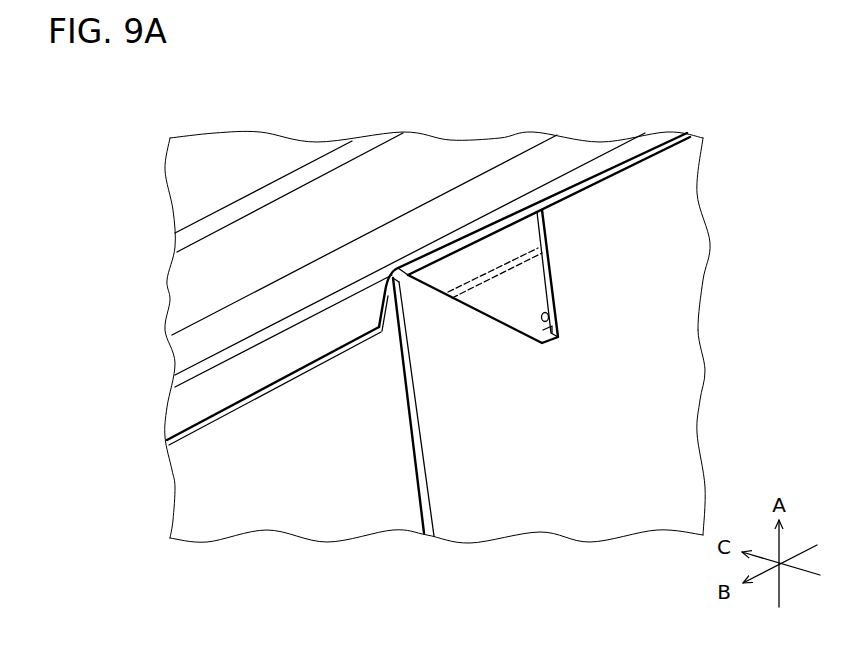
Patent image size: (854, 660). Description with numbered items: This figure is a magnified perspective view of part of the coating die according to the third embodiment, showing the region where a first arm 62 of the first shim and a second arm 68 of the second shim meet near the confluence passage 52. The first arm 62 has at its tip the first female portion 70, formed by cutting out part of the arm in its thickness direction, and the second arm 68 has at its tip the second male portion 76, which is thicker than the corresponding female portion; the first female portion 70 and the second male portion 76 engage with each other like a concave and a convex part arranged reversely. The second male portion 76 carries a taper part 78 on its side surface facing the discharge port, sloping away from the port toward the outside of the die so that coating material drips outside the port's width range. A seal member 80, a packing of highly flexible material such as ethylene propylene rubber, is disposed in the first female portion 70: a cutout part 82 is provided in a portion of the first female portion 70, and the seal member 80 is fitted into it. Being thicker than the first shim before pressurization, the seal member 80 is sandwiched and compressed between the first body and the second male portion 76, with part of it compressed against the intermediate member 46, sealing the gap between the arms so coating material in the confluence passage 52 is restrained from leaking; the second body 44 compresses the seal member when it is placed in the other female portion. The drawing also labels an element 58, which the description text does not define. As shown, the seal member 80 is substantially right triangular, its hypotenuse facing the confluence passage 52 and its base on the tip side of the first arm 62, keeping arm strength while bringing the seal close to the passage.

The second body 44 is at (172, 357).
The intermediate member 46 is at (207, 527).
The confluence passage 52 is at (202, 397).
The vertical leg wall 58 is at (427, 516).
The first arm 62 is at (710, 508).
The second arm 68 is at (680, 124).
The first female portion 70 is at (607, 198).
The second male portion 76 is at (582, 178).
The taper part 78 is at (394, 270).
The seal member 80 is at (508, 297).
The cutout part 82 is at (558, 322).